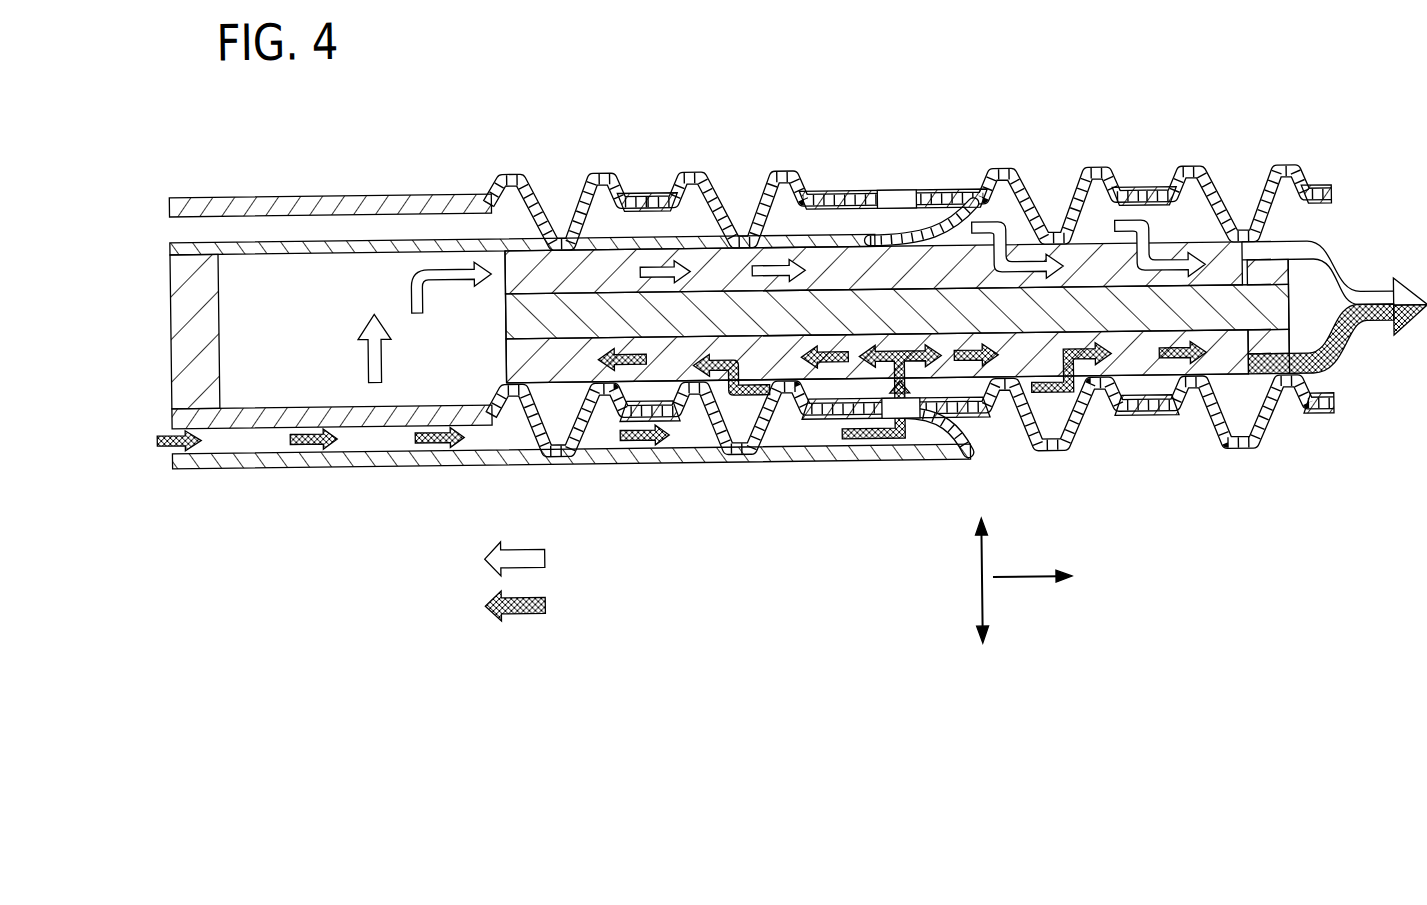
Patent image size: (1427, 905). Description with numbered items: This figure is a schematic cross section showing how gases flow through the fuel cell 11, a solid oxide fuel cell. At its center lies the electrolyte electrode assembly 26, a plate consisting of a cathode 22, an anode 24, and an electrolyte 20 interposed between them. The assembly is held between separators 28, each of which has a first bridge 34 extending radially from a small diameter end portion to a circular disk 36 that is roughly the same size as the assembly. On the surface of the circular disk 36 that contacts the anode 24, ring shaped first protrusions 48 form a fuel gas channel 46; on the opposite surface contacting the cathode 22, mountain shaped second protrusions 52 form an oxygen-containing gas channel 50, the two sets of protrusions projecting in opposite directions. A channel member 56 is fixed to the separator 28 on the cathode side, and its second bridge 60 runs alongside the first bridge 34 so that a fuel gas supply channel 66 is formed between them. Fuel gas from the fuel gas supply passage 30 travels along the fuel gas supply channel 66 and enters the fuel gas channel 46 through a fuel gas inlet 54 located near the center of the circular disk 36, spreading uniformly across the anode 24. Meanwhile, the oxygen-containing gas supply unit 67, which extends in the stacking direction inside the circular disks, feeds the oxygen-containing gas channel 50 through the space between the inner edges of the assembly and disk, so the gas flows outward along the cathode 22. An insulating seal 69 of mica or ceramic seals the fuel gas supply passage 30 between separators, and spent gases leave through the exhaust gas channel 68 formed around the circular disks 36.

The fuel cell 11 is at (515, 99).
The electrolyte 20 is at (1145, 329).
The cathode 22 is at (1162, 290).
The anode 24 is at (1207, 476).
The electrolyte electrode assembly 26 is at (898, 378).
The separator 28 is at (1338, 176).
The fuel gas supply passage 30 is at (148, 372).
The first bridge 34 is at (254, 201).
The circular disk 36 is at (1142, 197).
The fuel gas channel 46 is at (945, 398).
The first protrusion 48 is at (692, 181).
The oxygen-containing gas channel 50 is at (1020, 245).
The second protrusion 52 is at (1105, 203).
The fuel gas inlet 54 is at (910, 419).
The channel member 56 is at (305, 255).
The second bridge 60 is at (260, 258).
The fuel gas supply channel 66 is at (324, 235).
The oxygen-containing gas supply unit 67 is at (278, 371).
The exhaust gas channel 68 is at (1353, 306).
The insulating seal 69 is at (195, 328).